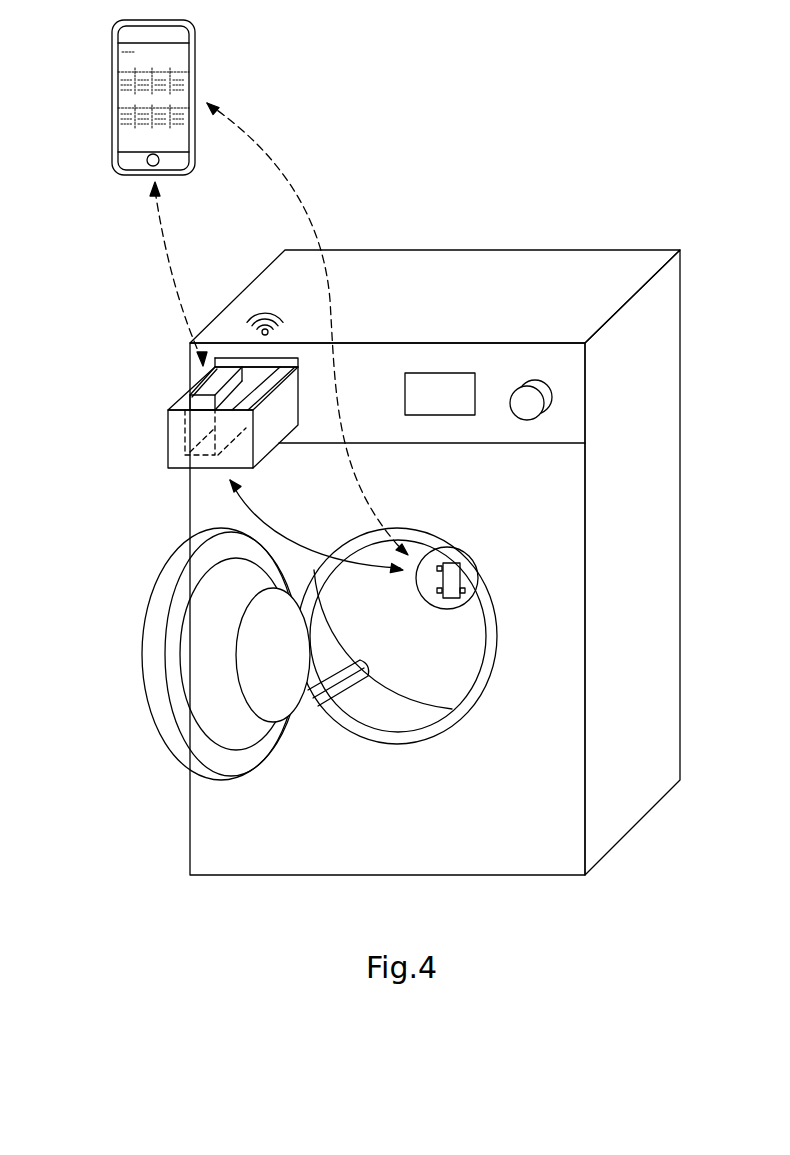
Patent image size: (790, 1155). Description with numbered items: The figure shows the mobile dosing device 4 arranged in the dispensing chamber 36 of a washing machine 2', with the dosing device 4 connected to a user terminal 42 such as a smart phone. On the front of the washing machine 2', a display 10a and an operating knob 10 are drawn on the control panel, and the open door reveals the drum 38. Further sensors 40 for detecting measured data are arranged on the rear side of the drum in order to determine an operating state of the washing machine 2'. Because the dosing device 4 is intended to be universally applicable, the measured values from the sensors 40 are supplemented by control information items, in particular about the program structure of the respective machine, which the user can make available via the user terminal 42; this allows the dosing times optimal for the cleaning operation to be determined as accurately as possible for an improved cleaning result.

The user terminal 42 is at (112, 92).
The washing machine 2' is at (435, 539).
The display 10a is at (434, 388).
The operating knob / control element 10 is at (529, 398).
The mobile dosing device 4 is at (208, 392).
The dispensing chamber 36 is at (263, 441).
The further sensors 40 is at (428, 584).
The drum 38 is at (367, 708).